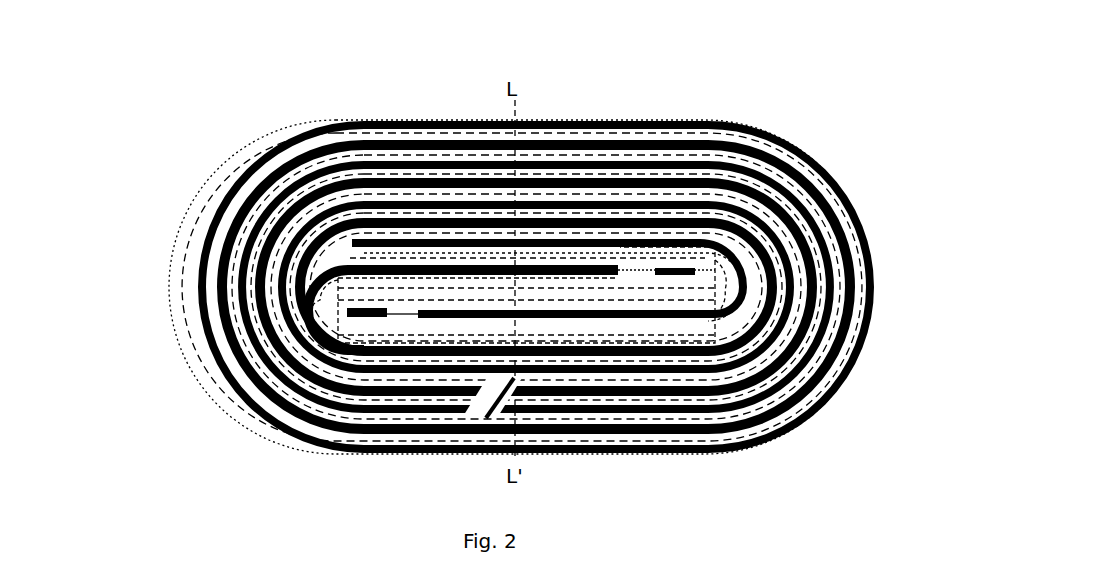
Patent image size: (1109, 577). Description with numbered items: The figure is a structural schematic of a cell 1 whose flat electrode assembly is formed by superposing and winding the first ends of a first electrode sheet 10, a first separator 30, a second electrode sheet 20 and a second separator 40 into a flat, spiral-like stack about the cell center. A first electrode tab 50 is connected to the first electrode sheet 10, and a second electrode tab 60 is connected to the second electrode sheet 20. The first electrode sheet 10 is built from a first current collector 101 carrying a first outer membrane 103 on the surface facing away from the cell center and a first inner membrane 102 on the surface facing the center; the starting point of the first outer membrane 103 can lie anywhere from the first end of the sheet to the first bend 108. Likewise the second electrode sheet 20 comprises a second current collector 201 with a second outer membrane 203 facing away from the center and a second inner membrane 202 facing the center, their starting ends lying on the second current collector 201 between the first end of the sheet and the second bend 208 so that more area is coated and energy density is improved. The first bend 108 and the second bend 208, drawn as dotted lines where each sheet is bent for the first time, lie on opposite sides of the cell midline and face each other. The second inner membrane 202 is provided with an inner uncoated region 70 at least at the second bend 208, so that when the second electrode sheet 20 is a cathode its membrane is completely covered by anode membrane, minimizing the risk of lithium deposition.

The cell 1 is at (163, 260).
The first electrode sheet 10 is at (870, 24).
The first current collector 101 is at (580, 275).
The first inner membrane 102 is at (612, 273).
The first outer membrane 103 is at (548, 275).
The first bend 108 is at (347, 317).
The second electrode sheet 20 is at (172, 437).
The second current collector 201 is at (448, 322).
The second inner membrane 202 is at (482, 318).
The second outer membrane 203 is at (415, 325).
The second bend 208 is at (735, 288).
The first separator 30 is at (470, 265).
The second separator 40 is at (410, 278).
The first electrode tab 50 is at (718, 250).
The second electrode tab 60 is at (318, 318).
The inner uncoated region 70 is at (812, 330).